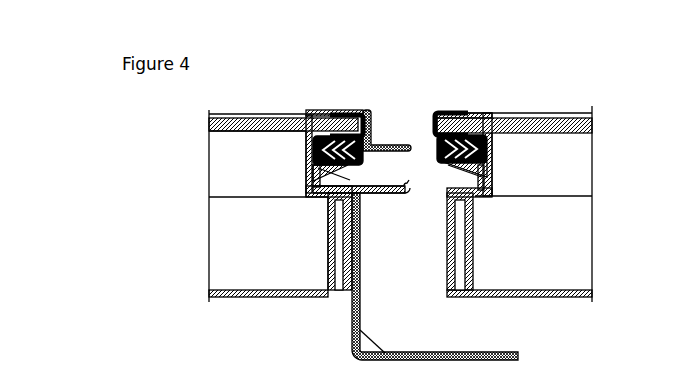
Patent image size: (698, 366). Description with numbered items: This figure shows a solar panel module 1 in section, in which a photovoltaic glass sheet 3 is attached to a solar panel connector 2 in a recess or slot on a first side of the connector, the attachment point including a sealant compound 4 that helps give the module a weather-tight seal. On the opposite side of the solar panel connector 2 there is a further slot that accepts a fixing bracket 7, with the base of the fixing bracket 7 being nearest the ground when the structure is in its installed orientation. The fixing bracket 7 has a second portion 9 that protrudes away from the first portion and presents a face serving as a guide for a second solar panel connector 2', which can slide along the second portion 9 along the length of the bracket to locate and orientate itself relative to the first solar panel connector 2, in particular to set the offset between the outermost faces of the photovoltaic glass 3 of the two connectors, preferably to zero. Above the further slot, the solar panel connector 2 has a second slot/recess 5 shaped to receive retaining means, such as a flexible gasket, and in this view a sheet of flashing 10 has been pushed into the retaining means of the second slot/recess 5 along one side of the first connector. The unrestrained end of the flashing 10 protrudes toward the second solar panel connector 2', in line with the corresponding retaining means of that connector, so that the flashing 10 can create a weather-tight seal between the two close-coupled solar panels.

The solar panel module 1 is at (210, 187).
The solar panel connector 2 is at (333, 218).
The second solar panel connector 2' is at (444, 212).
The photovoltaic glass sheet 3 is at (246, 120).
The sealant compound 4 is at (330, 118).
The second slot/recess 5 is at (428, 155).
The fixing bracket 7 is at (466, 353).
The second portion 9 is at (410, 184).
The flashing 10 is at (372, 118).